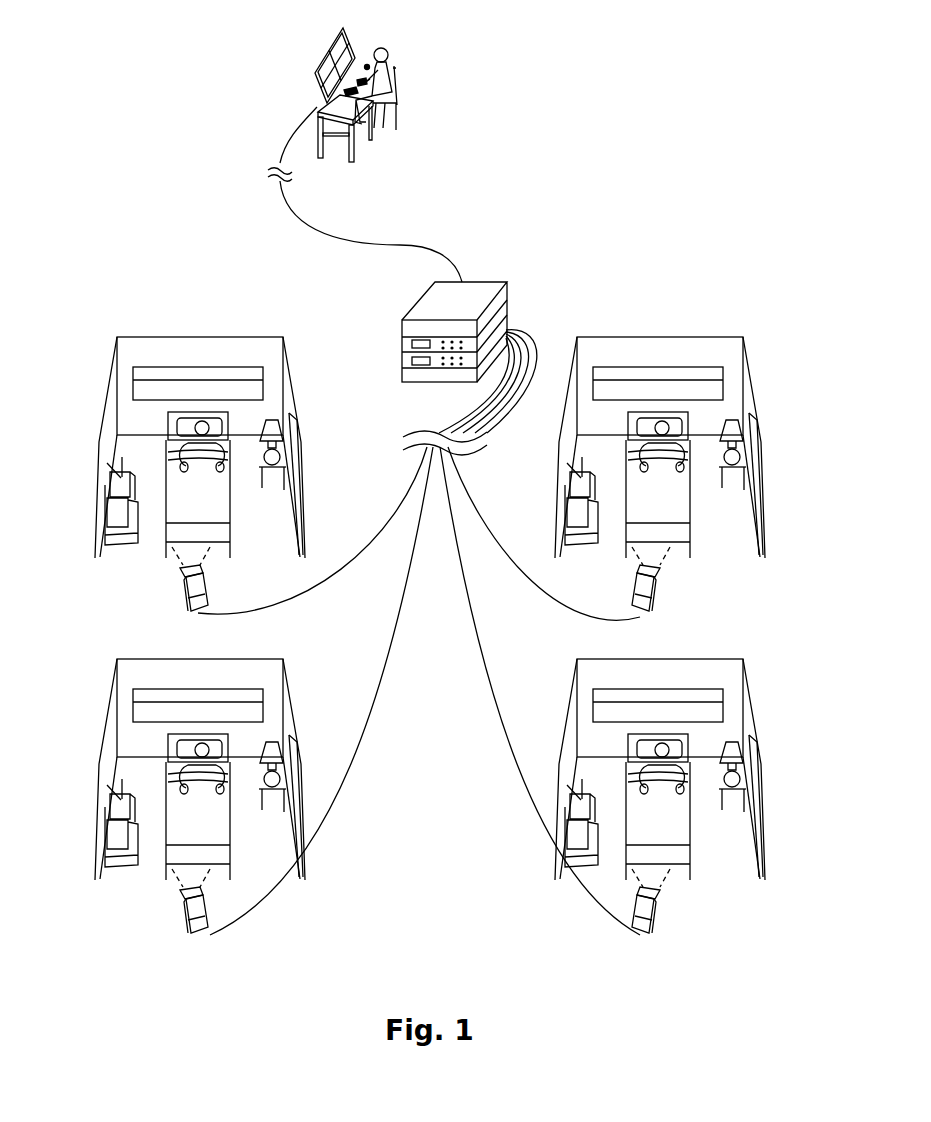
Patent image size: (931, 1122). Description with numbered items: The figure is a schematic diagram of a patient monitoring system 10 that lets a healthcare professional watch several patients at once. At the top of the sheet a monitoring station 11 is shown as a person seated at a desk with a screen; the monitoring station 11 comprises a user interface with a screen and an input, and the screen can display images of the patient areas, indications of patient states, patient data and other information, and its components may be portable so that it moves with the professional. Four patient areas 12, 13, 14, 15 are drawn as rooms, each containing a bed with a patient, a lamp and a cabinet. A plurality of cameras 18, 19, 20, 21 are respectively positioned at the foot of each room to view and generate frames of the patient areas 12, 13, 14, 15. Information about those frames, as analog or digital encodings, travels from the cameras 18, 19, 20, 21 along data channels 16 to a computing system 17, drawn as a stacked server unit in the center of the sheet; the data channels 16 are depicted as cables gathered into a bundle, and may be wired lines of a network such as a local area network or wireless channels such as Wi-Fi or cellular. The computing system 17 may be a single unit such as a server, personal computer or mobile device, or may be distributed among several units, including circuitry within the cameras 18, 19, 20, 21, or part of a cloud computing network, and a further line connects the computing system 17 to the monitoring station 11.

The patient monitoring system 10 is at (624, 104).
The monitoring station 11 is at (306, 50).
The patient area 12 is at (101, 368).
The patient area 13 is at (759, 352).
The patient area 14 is at (103, 673).
The patient area 15 is at (765, 688).
The data channels 16 is at (410, 413).
The computing system 17 is at (500, 284).
The camera 18 is at (187, 598).
The camera 19 is at (655, 603).
The camera 20 is at (195, 938).
The camera 21 is at (645, 940).